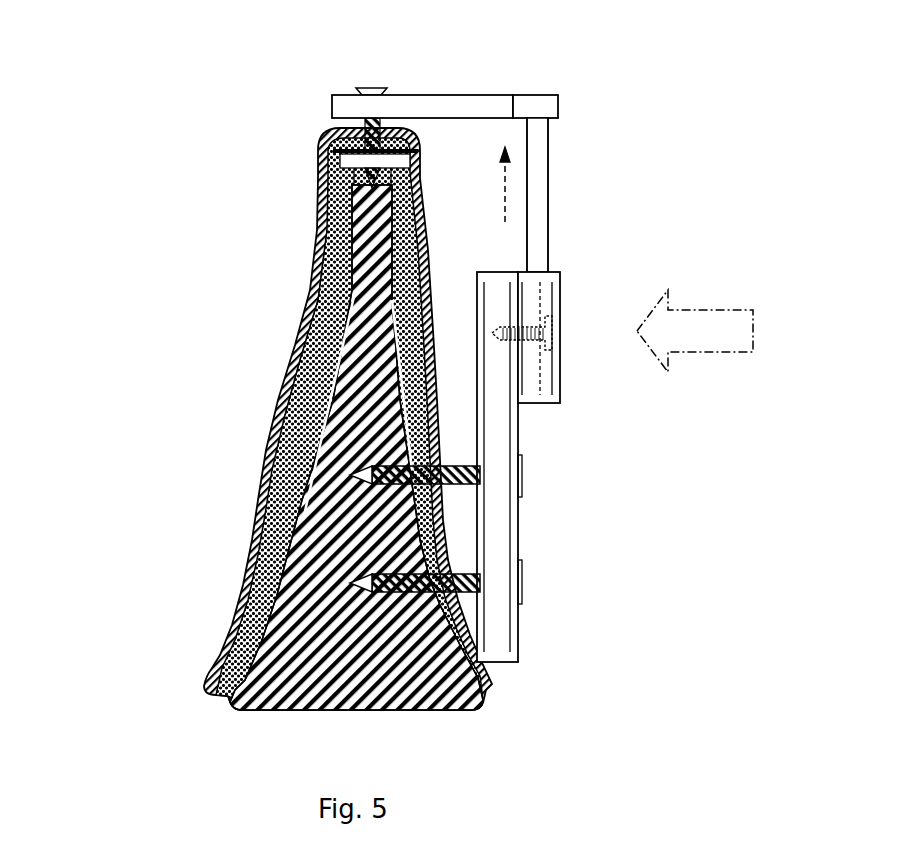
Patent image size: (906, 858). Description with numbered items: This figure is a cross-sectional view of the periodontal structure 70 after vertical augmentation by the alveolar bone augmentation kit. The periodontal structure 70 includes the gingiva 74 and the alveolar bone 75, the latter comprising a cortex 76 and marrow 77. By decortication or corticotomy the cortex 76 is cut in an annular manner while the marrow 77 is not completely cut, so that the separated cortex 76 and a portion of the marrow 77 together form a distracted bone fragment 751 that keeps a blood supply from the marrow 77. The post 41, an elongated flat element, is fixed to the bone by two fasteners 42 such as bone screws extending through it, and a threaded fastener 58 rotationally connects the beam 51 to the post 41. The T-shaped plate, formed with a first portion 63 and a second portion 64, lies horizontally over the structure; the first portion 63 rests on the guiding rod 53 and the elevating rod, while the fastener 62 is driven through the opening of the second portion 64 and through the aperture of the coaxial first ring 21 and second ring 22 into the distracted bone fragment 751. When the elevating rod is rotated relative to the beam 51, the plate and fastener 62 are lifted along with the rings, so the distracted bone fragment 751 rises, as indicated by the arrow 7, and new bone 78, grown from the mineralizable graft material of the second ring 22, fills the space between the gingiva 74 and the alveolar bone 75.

The pressing direction arrow 7 is at (708, 331).
The first ring 21 is at (333, 153).
The second ring 22 is at (345, 185).
The post 41 is at (495, 517).
The fastener 42 is at (453, 458).
The beam 51 is at (543, 221).
The guiding rod 53 is at (540, 173).
The fastener 58 is at (530, 322).
The fastener 62 is at (358, 85).
The first portion 63 is at (528, 94).
The second portion 64 is at (405, 96).
The periodontal structure 70 is at (250, 444).
The gingiva 74 is at (260, 505).
The alveolar bone 75 is at (107, 528).
The cortex 76 is at (287, 543).
The marrow 77 is at (317, 598).
The new bone 78 is at (317, 373).
The distracted bone fragment 751 is at (313, 220).